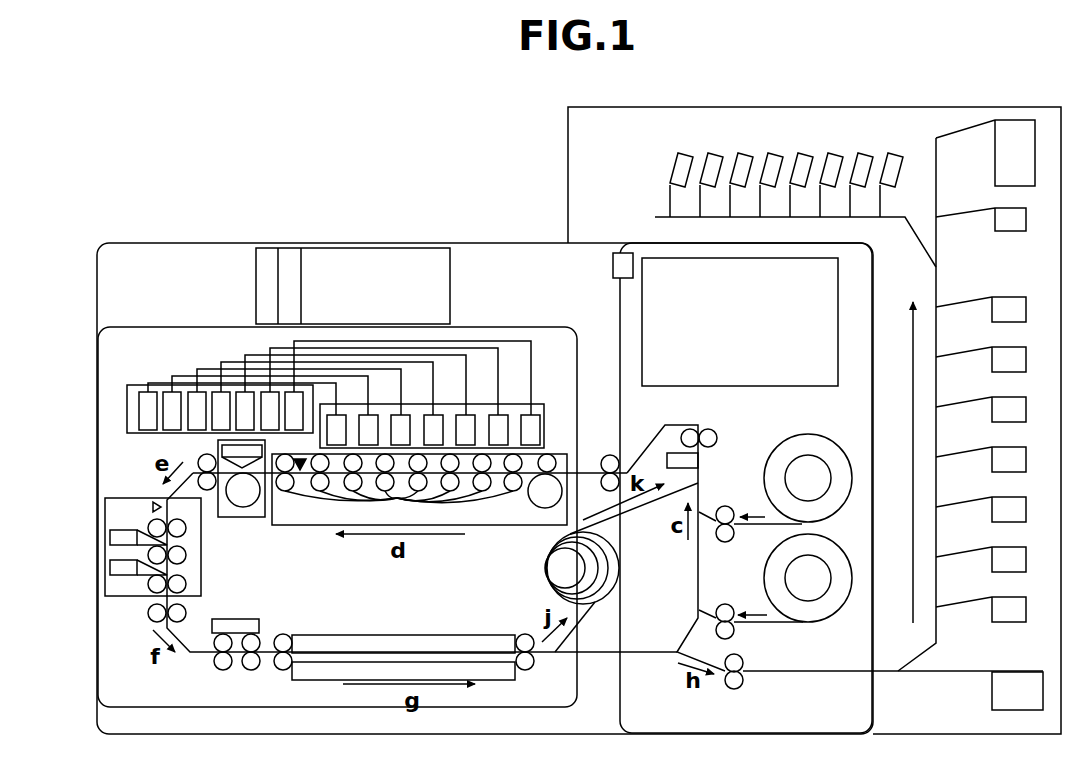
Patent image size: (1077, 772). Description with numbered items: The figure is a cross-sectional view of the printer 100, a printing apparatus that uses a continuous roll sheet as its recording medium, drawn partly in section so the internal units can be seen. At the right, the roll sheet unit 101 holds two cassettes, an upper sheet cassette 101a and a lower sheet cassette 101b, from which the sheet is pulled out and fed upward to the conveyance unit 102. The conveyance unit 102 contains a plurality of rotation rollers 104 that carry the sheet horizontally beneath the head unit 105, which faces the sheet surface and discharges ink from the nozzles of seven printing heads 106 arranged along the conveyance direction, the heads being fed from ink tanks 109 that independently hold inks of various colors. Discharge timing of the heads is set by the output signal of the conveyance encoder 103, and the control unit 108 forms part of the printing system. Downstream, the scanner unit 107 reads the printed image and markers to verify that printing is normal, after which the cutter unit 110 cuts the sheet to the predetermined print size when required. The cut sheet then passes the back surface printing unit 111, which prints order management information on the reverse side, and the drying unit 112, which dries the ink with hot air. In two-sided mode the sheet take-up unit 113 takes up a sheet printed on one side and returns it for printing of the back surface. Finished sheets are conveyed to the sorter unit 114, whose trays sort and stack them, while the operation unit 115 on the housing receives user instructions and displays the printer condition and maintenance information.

The printer 100 is at (883, 107).
The roll sheet unit 101 is at (775, 561).
The upper sheet cassette 101a is at (770, 484).
The lower sheet cassette 101b is at (842, 625).
The conveyance unit 102 is at (312, 526).
The conveyance encoder 103 is at (545, 497).
The rotation rollers 104 is at (399, 508).
The head unit 105 is at (547, 410).
The printing heads 106 is at (336, 422).
The scanner unit 107 is at (248, 518).
The control unit 108 is at (256, 290).
The ink tanks 109 is at (294, 400).
The cutter unit 110 is at (202, 563).
The back surface printing unit 111 is at (260, 621).
The drying unit 112 is at (363, 635).
The sheet take-up unit 113 is at (545, 572).
The sorter unit 114 is at (568, 167).
The operation unit 115 is at (780, 387).